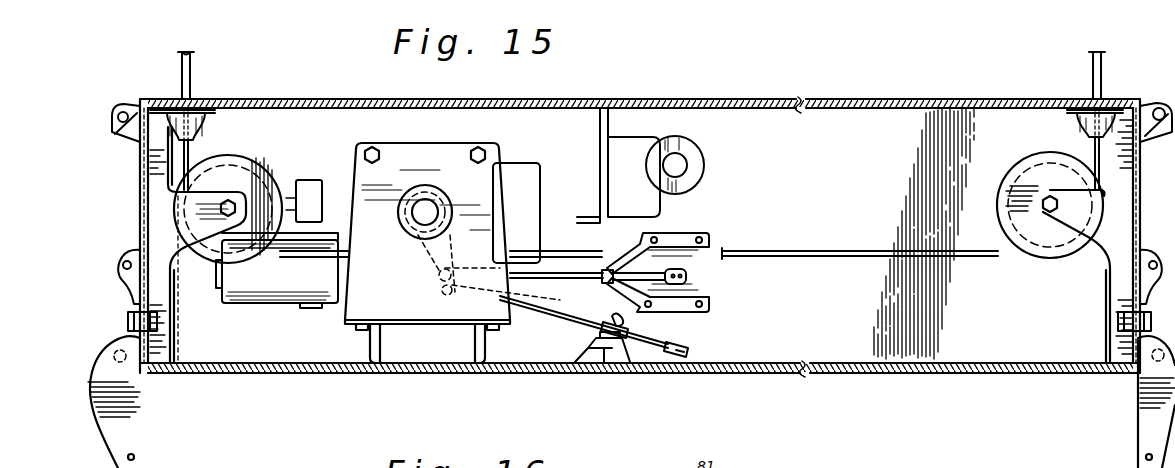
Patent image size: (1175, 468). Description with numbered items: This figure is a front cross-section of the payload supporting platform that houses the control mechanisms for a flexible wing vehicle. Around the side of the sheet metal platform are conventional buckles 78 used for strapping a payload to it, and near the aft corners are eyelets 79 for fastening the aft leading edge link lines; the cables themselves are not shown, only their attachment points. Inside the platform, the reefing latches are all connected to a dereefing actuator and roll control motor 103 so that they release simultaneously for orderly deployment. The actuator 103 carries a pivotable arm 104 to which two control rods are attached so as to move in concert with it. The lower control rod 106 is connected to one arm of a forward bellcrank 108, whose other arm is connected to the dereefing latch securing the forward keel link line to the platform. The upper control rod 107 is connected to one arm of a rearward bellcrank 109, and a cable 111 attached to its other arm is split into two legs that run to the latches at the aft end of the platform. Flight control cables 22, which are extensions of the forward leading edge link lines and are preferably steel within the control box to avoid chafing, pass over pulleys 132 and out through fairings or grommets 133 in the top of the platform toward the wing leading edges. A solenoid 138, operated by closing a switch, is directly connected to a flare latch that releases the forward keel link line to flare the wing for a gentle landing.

The cables 22 is at (193, 68).
The buckles 78 is at (92, 368).
The eyelets 79 is at (120, 134).
The dereefing actuator and roll control motor 103 is at (516, 213).
The pivotable arm 104 is at (430, 252).
The lower control rod 106 is at (566, 325).
The upper control rod 107 is at (578, 279).
The forward bellcrank 108 is at (665, 255).
The rearward bellcrank 109 is at (660, 340).
The cable 111 is at (684, 279).
The pulleys 132 is at (247, 160).
The fairings or grommet 133 is at (206, 115).
The solenoid 138 is at (703, 177).